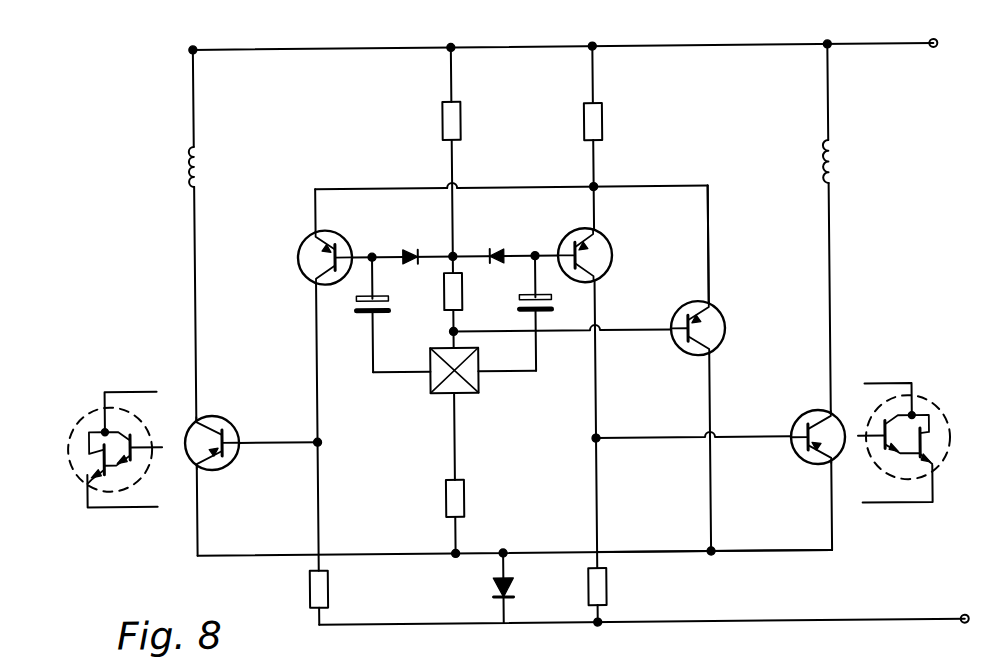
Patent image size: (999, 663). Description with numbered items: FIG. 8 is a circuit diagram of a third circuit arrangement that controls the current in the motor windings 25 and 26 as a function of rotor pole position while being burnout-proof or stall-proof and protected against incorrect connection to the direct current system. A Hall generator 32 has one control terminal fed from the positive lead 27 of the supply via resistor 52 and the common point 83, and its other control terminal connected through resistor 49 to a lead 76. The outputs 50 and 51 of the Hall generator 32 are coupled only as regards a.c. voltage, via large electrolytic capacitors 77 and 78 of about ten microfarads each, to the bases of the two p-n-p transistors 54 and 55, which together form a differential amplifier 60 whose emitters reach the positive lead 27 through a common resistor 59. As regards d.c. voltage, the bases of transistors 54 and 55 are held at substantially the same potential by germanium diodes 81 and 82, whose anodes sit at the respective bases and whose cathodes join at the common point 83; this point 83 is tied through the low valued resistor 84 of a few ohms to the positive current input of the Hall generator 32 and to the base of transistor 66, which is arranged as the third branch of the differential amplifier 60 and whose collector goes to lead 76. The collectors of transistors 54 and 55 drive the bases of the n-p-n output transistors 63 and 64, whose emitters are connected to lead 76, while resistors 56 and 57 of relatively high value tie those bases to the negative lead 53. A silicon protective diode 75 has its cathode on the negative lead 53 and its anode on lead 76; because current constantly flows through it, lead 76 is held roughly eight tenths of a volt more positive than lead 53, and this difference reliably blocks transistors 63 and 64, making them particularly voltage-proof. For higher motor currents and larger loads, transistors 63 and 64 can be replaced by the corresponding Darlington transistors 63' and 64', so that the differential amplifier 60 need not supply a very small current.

The winding 25 is at (835, 158).
The winding 26 is at (200, 158).
The positive terminal 27 is at (905, 48).
The Hall generator 32 is at (443, 393).
The resistor 49 is at (456, 504).
The output 50 is at (404, 371).
The output 51 is at (498, 371).
The resistor 52 is at (456, 125).
The negative lead 53 is at (898, 622).
The p-n-p transistor 54 is at (343, 238).
The p-n-p transistor 55 is at (610, 242).
The resistor 56 is at (319, 593).
The resistor 57 is at (598, 593).
The common resistor 59 is at (597, 127).
The differential amplifier 60 is at (619, 302).
The n-p-n transistor 63 is at (230, 429).
The Darlington transistor 63' is at (99, 444).
The n-p-n transistor 64 is at (801, 420).
The Darlington transistor 64' is at (928, 442).
The transistor 66 is at (722, 324).
The protective diode 75 is at (511, 590).
The lead 76 is at (665, 553).
The electrolytic capacitor 77 is at (389, 301).
The electrolytic capacitor 78 is at (552, 301).
The germanium diode 81 is at (410, 249).
The germanium diode 82 is at (500, 249).
The common point 83 is at (458, 250).
The low valued resistor 84 is at (455, 297).